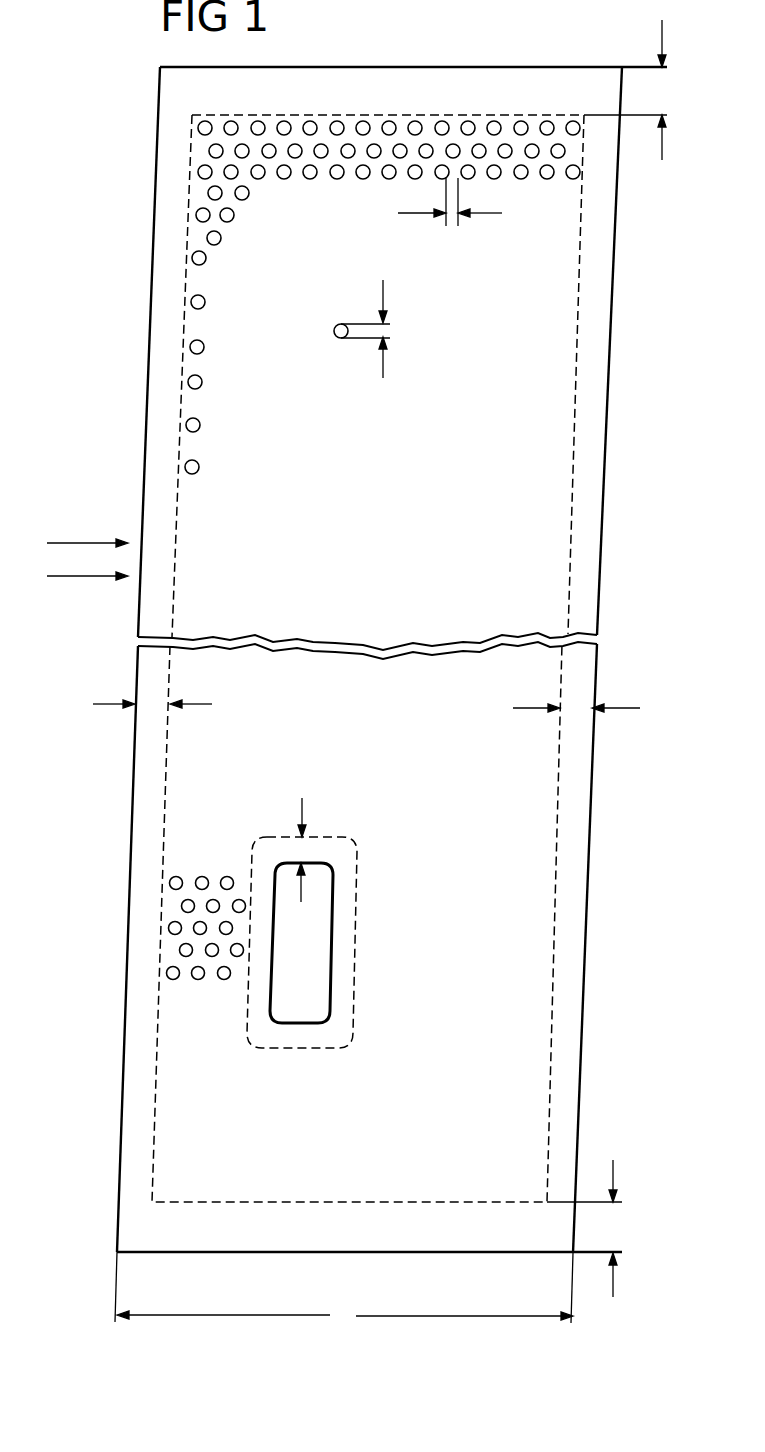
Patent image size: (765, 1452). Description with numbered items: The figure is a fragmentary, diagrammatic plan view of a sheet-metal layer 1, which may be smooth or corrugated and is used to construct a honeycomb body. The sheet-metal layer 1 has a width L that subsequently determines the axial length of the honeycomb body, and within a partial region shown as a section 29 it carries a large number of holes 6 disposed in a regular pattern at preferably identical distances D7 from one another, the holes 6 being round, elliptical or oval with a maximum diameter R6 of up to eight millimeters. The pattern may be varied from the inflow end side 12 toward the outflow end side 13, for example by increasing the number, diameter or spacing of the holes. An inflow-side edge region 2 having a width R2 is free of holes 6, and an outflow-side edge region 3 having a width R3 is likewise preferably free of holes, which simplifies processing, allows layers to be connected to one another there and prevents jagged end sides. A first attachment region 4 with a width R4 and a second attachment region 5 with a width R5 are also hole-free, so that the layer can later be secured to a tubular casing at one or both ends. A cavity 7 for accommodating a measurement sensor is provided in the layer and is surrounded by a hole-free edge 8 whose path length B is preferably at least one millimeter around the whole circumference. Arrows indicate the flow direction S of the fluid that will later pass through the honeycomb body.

The sheet-metal layer 1 is at (378, 666).
The inflow-side edge region 2 is at (137, 928).
The outflow-side edge region 3 is at (573, 930).
The first attachment region 4 is at (405, 75).
The second attachment region 5 is at (327, 1240).
The holes 6 is at (200, 425).
The cavity 7 is at (320, 908).
The hole-free edge 8 is at (345, 992).
The inflow end side 12 is at (134, 397).
The outflow end side 13 is at (619, 395).
The section 29 is at (138, 1109).
The width of inflow-side edge region R2 is at (153, 704).
The width of outflow-side edge region R3 is at (577, 703).
The width of first attachment region R4 is at (659, 90).
The width of second attachment region R5 is at (612, 1228).
The maximum diameter R6 is at (378, 329).
The distances D7 is at (452, 222).
The path length B is at (300, 850).
The width L is at (345, 1318).
The flow direction S is at (78, 540).